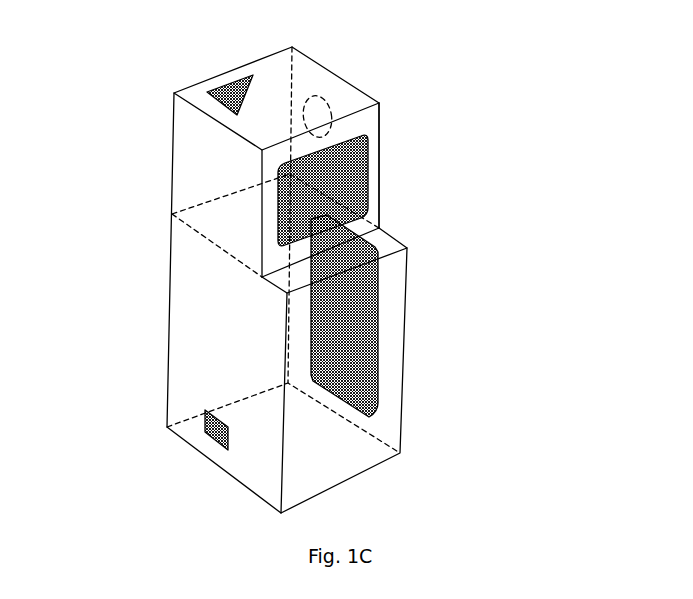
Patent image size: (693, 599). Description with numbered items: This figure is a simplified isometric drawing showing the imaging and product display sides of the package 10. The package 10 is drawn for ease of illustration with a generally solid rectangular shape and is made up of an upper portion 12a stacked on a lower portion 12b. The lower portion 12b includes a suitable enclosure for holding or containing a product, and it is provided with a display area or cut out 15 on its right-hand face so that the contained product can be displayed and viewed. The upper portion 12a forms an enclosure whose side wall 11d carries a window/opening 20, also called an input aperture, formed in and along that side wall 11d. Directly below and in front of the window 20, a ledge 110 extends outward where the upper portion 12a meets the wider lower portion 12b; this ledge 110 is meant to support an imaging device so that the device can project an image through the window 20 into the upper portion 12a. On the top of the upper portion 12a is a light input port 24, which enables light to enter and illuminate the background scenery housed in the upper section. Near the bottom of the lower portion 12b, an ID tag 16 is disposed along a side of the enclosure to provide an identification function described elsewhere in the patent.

The package 10 is at (355, 270).
The side wall 11d is at (371, 122).
The upper portion 12a is at (197, 182).
The lower portion 12b is at (180, 340).
The display area 15 is at (378, 322).
The ID tag 16 is at (204, 427).
The window/opening 20 is at (358, 172).
The light input port 24 is at (228, 79).
The ledge 110 is at (390, 250).